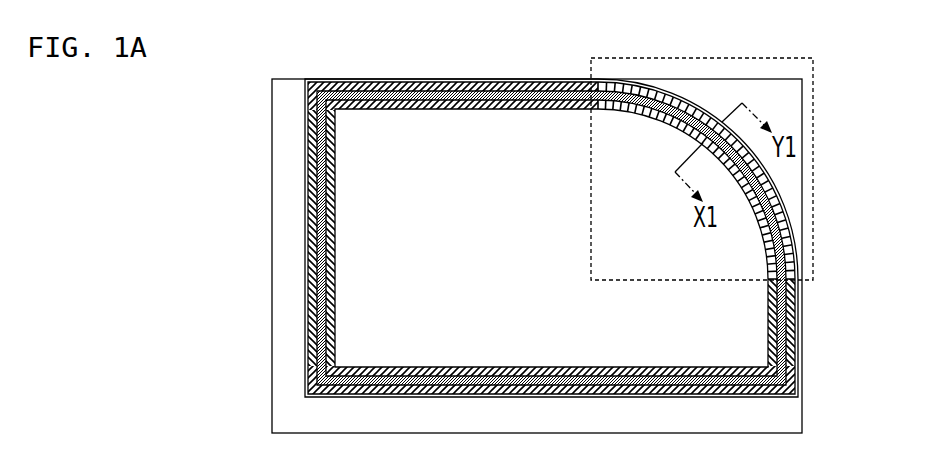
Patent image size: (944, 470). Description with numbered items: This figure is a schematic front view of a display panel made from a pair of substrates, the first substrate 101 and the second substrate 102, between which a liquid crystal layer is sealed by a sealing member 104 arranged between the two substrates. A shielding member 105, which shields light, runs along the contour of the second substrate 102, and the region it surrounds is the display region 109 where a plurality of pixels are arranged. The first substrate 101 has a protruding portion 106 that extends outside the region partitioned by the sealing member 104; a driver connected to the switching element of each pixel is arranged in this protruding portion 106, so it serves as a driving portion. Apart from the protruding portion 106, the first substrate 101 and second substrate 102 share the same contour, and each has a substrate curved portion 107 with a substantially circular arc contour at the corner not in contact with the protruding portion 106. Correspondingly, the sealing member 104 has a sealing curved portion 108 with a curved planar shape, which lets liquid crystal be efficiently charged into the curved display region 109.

The first substrate 101 is at (272, 215).
The second substrate 102 is at (305, 135).
The sealing member 104 is at (788, 353).
The shielding member 105 is at (788, 320).
The protruding portion 106 is at (283, 289).
The substrate curved portion 107 is at (711, 97).
The sealing curved portion 108 is at (776, 197).
The display region 109 is at (437, 127).